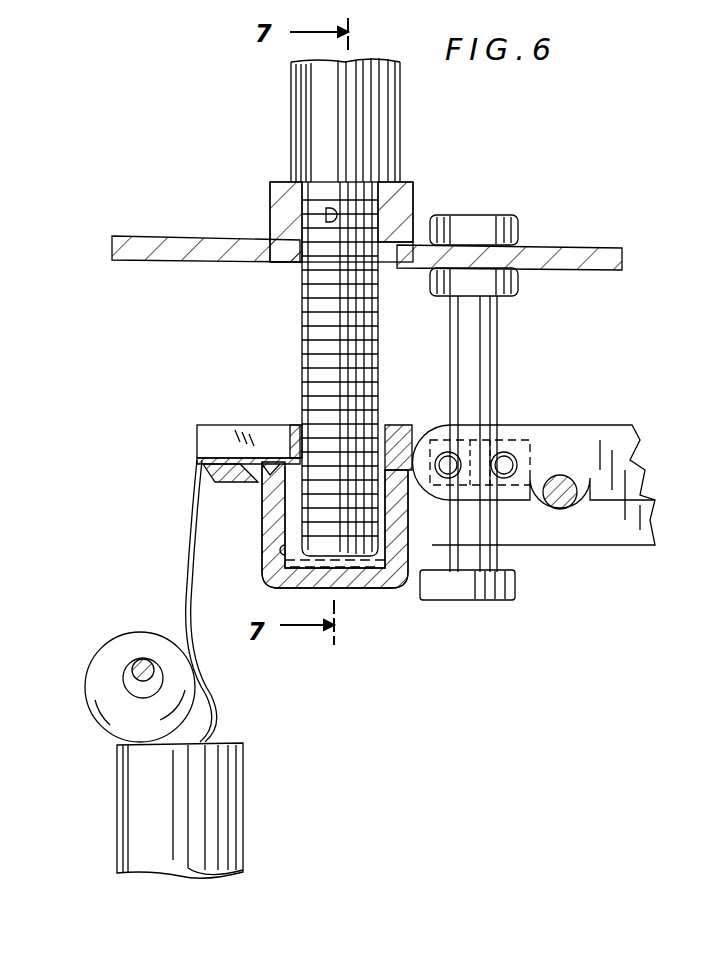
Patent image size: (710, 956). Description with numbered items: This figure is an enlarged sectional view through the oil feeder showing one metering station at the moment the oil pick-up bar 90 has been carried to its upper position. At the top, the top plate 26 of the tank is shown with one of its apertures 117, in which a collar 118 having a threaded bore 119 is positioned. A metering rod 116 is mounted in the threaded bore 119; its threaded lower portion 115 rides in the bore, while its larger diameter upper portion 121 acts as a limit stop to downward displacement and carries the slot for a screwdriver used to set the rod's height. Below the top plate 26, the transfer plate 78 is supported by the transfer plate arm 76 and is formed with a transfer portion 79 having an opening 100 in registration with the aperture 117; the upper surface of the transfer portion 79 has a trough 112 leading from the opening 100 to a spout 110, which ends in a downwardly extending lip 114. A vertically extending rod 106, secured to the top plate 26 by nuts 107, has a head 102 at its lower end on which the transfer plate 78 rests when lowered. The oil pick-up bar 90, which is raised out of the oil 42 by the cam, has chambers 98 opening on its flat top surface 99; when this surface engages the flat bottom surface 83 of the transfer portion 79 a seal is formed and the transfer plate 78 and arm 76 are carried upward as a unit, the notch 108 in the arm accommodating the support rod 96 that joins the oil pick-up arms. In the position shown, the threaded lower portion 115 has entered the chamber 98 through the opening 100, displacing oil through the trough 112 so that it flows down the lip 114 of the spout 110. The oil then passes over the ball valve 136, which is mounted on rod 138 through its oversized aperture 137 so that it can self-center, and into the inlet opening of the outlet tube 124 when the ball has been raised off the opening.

The top plate 26 is at (596, 245).
The oil 42 is at (370, 570).
The transfer plate arm 76 is at (582, 426).
The transfer plate 78 is at (200, 425).
The transfer portion 79 is at (386, 440).
The flat bottom surface 83 is at (230, 490).
The oil-pick-up bar 90 is at (262, 536).
The support rod 96 is at (562, 510).
The chamber 98 is at (285, 560).
The top surface 99 is at (266, 466).
The opening 100 is at (288, 442).
The head 102 is at (512, 600).
The rod 106 is at (492, 348).
The nut 107 is at (513, 216).
The notch 108 is at (545, 478).
The spout 110 is at (232, 425).
The trough 112 is at (205, 440).
The lip 114 is at (200, 470).
The threaded lower portion 115 is at (302, 343).
The metering rod 116 is at (288, 113).
The aperture 117 is at (297, 264).
The collar 118 is at (271, 188).
The threaded bore 119 is at (300, 222).
The upper portion 121 is at (402, 114).
The outlet tube 124 is at (244, 755).
The ball valve 136 is at (148, 634).
The aperture 137 is at (124, 678).
The rod 138 is at (135, 664).